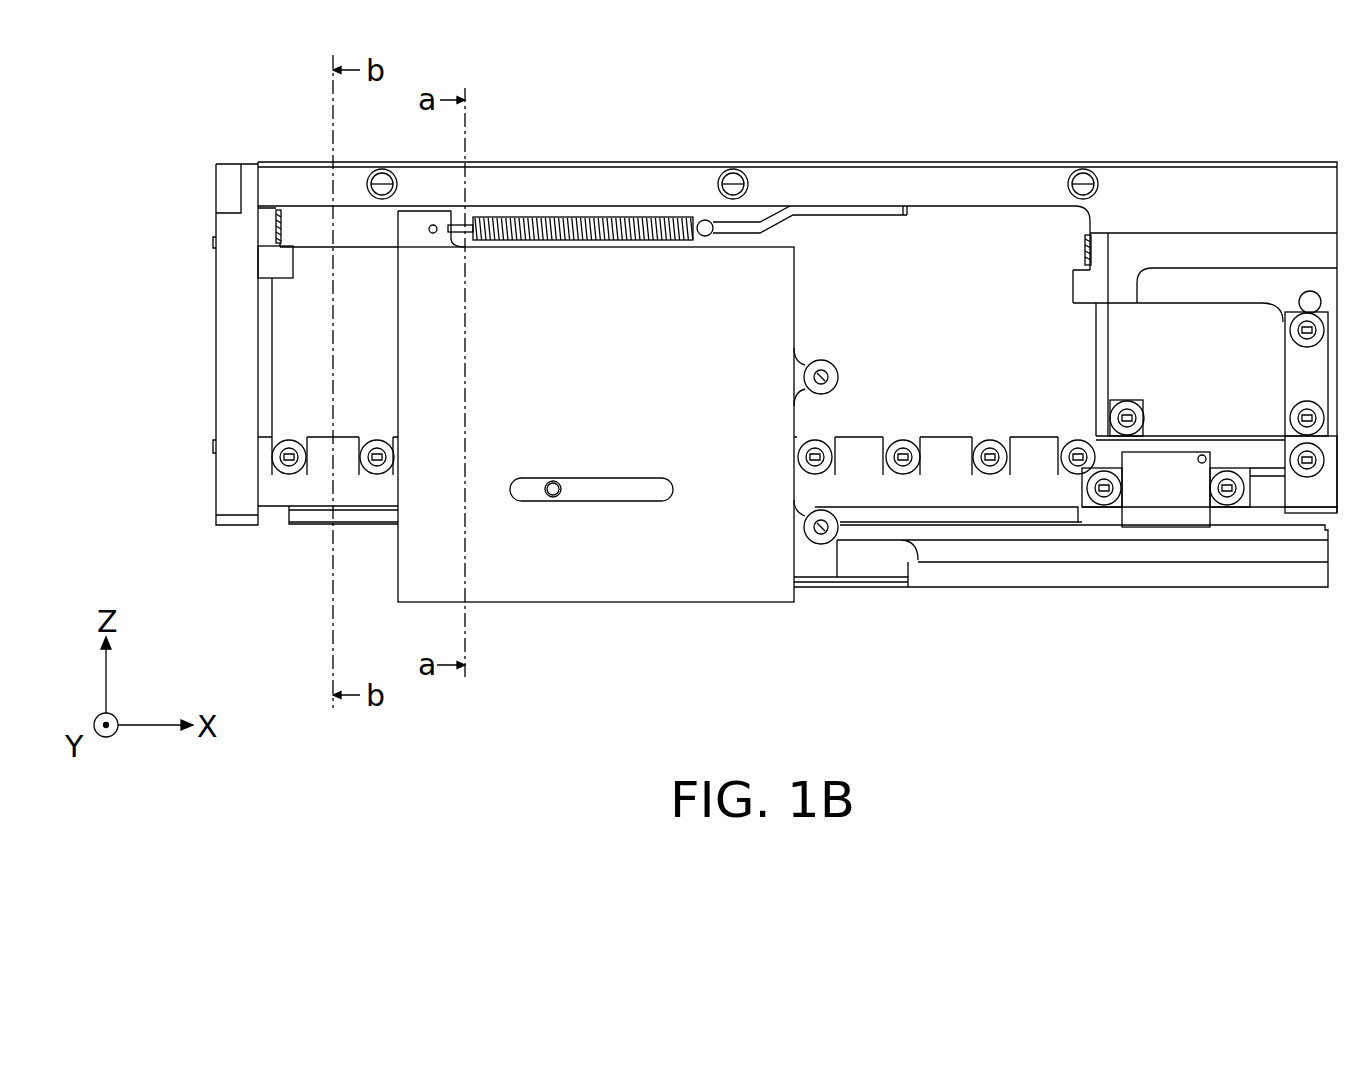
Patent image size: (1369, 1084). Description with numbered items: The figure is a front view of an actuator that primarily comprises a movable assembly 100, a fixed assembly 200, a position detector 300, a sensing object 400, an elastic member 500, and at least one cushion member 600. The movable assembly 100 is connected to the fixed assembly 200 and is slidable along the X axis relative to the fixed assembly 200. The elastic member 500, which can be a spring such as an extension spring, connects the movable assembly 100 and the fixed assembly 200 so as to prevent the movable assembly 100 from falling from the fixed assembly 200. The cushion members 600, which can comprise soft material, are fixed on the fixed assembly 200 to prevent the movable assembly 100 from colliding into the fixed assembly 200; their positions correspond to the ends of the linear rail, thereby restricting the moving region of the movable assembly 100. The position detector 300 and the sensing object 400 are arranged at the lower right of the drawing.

The movable assembly 100 is at (648, 602).
The fixed assembly 200 is at (905, 163).
The position detector 300 is at (1167, 500).
The sensing object 400 is at (1047, 535).
The elastic member 500 is at (640, 212).
The cushion member 600 is at (277, 262).